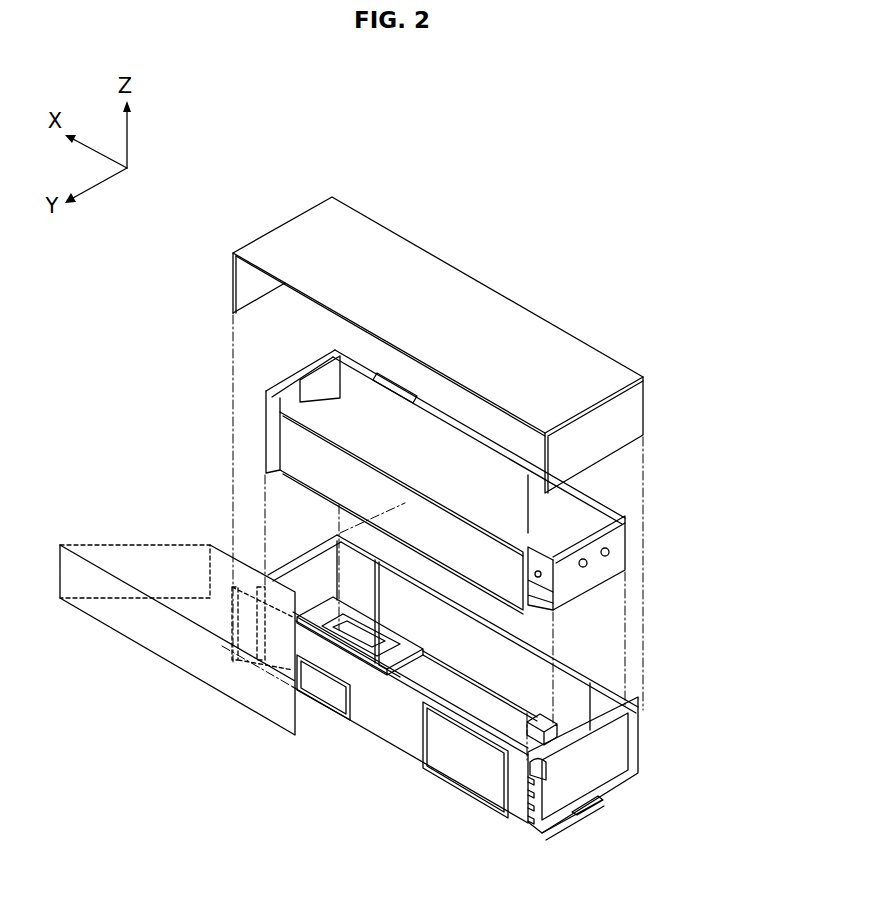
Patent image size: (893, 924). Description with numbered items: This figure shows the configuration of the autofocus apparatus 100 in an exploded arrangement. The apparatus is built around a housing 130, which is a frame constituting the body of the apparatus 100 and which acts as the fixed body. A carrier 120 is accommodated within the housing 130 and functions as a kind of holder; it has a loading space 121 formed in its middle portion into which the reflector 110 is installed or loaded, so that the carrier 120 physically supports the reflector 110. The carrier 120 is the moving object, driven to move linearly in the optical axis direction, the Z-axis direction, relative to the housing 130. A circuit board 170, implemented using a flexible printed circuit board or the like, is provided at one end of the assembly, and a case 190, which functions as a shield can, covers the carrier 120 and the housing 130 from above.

The autofocus apparatus 100 is at (672, 401).
The reflector 110 is at (135, 556).
The carrier 120 is at (397, 482).
The loading space 121 is at (362, 489).
The housing 130 is at (386, 720).
The circuit board 170 is at (598, 775).
The case 190 is at (468, 300).